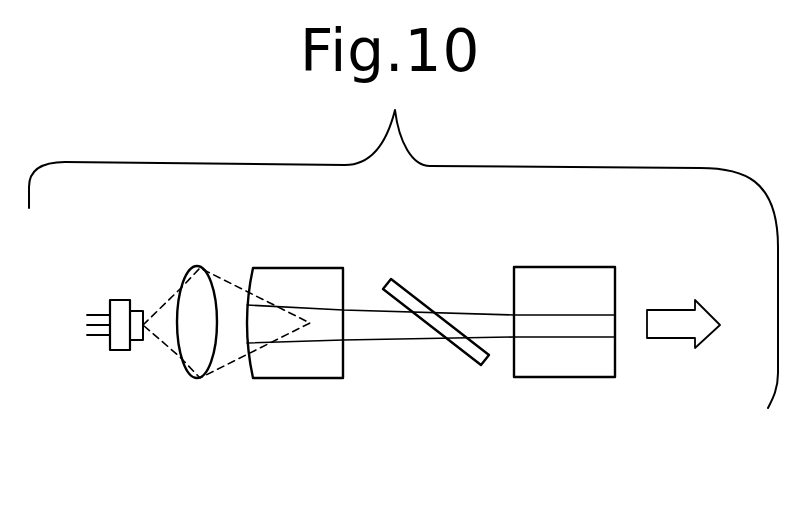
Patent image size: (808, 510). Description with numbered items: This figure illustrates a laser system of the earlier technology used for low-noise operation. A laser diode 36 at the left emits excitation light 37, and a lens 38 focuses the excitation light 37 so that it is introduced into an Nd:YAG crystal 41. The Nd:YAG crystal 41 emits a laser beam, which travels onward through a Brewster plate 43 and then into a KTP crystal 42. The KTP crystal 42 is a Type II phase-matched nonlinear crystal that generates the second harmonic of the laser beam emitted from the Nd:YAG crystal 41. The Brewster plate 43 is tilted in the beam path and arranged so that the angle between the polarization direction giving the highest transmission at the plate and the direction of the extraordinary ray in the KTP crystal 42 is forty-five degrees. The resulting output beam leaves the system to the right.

The laser diode 36 is at (122, 300).
The excitation light 37 is at (168, 293).
The lens 38 is at (200, 267).
The Nd:YAG crystal 41 is at (298, 268).
The KTP crystal 42 is at (550, 267).
The Brewster plate 43 is at (405, 288).